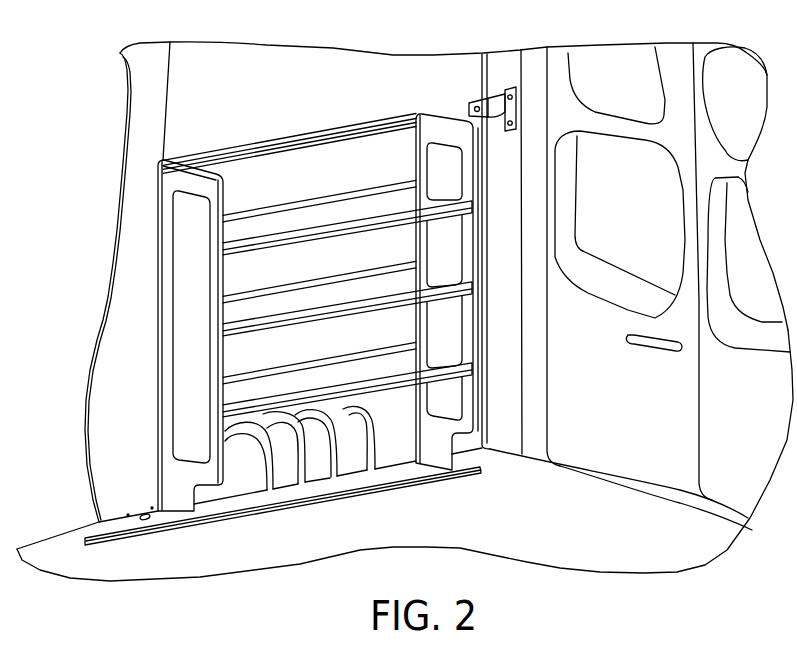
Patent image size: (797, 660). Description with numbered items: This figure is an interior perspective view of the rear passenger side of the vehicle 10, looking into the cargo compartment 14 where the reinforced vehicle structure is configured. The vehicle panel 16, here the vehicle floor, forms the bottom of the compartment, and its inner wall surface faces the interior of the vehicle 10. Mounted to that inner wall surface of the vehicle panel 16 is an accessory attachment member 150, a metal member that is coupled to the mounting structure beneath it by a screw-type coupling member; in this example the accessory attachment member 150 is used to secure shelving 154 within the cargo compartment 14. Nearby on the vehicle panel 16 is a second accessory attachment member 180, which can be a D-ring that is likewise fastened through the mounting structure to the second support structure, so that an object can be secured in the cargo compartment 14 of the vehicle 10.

The vehicle 10 is at (78, 164).
The cargo compartment 14 is at (567, 524).
The vehicle panel 16 is at (297, 535).
The accessory attachment member 150 is at (230, 520).
The shelving 154 is at (190, 350).
The second accessory attachment member 180 is at (134, 504).